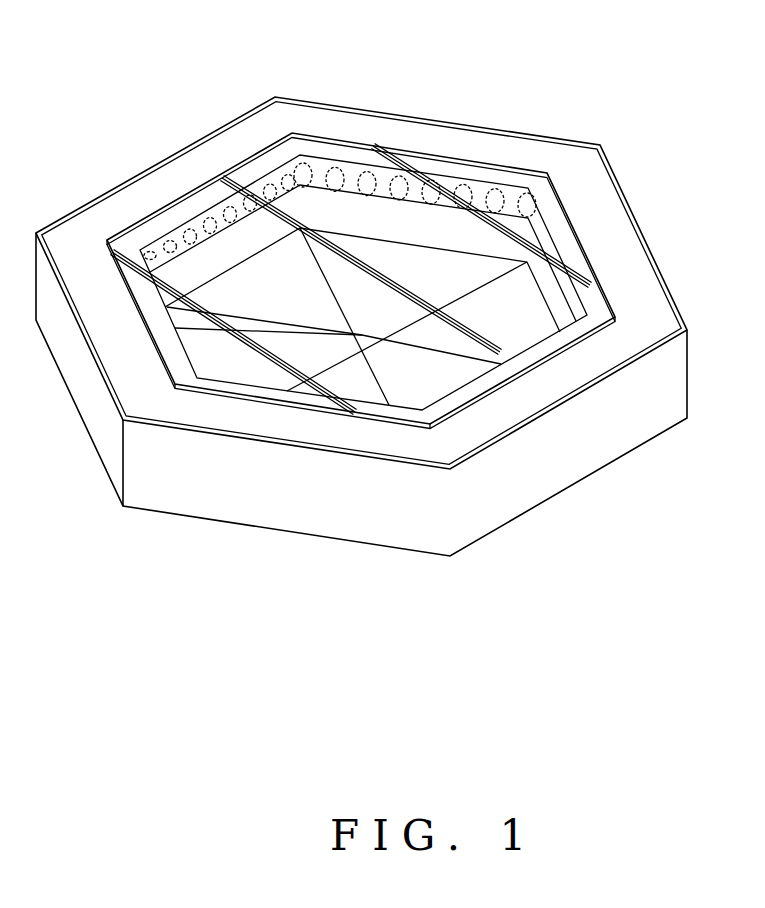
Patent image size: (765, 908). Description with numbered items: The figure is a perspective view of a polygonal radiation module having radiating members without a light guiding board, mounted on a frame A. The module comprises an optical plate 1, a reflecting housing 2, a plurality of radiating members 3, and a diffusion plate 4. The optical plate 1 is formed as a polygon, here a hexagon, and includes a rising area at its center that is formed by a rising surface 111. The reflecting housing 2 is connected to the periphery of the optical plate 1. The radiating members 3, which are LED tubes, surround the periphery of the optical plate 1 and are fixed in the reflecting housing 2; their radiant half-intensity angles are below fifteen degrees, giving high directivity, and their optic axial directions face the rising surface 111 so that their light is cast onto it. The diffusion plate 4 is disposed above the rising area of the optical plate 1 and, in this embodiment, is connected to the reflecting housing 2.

The optical plate 1 is at (357, 237).
The rising surface 111 is at (417, 263).
The reflecting housing 2 is at (568, 160).
The radiating members 3 is at (333, 170).
The diffusion plate 4 is at (497, 163).
The frame A is at (573, 452).